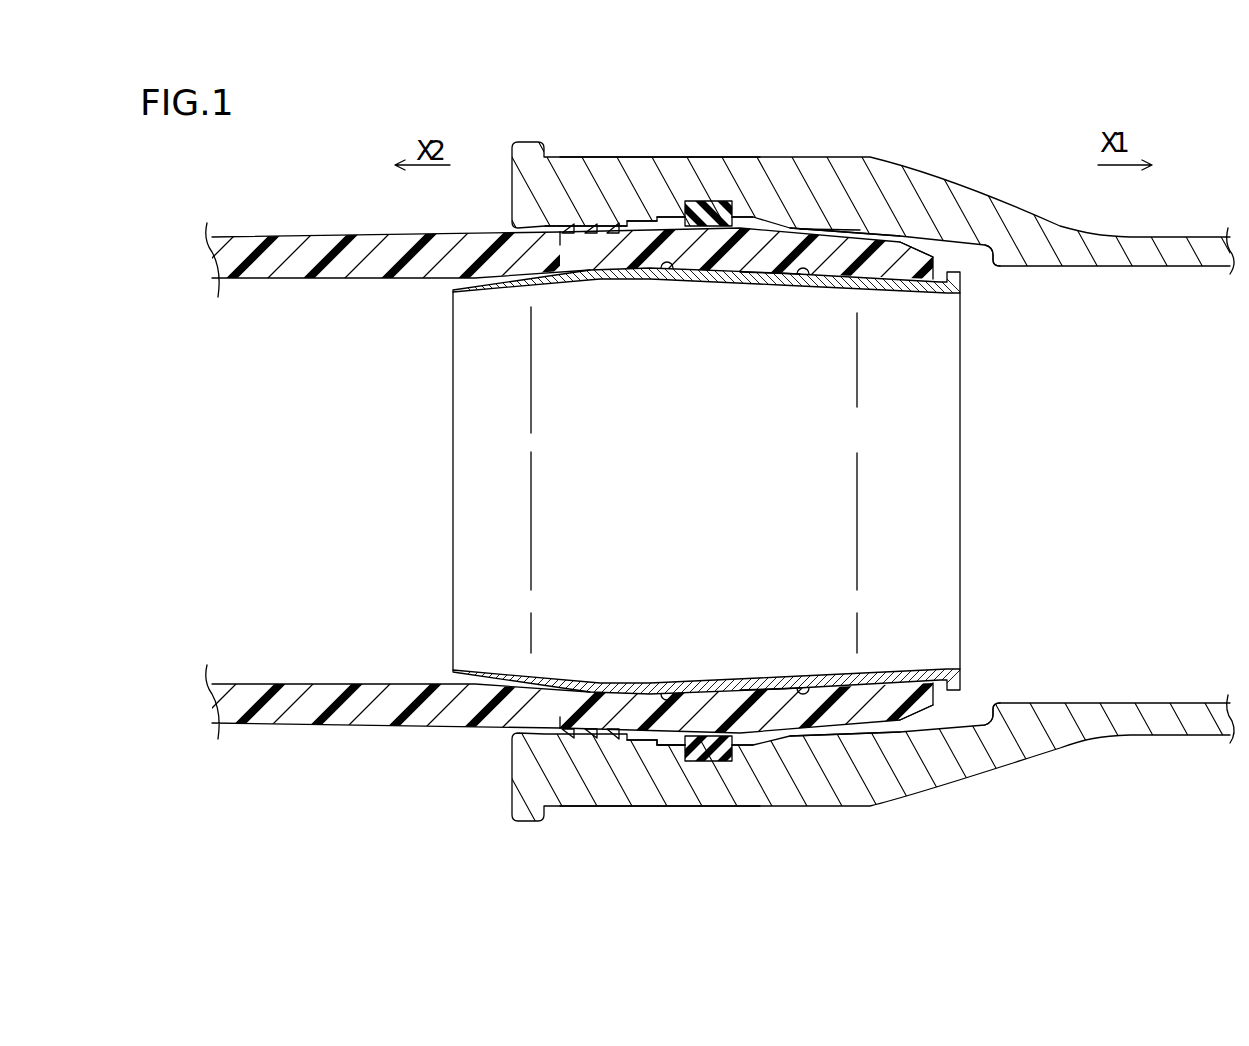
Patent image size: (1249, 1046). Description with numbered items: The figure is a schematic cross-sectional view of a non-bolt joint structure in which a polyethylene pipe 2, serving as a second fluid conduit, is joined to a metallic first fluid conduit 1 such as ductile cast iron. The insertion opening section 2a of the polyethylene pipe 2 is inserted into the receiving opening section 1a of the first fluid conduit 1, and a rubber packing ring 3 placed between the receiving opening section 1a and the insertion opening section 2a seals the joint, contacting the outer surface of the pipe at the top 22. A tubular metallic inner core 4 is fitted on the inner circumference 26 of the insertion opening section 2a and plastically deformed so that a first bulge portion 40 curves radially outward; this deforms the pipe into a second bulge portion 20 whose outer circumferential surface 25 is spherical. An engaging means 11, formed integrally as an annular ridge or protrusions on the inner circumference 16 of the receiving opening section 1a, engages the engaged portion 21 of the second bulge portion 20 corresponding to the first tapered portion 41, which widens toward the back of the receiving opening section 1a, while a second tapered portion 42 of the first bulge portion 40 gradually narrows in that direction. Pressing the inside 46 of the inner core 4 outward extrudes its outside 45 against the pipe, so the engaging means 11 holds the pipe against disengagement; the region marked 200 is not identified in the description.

The first fluid conduit 1 is at (902, 160).
The receiving opening section 1a is at (658, 157).
The polyethylene pipe 2 is at (292, 237).
The insertion opening section 2a is at (852, 232).
The packing ring 3 is at (722, 199).
The inner core 4 is at (936, 440).
The engaging means 11 is at (625, 234).
The inner circumference 16 is at (971, 268).
The second bulge portion 20 is at (739, 214).
The engaged portion 21 is at (611, 226).
The top 22 is at (688, 230).
The outer circumferential surface 25 is at (830, 240).
The inner circumference 26 is at (779, 273).
The first bulge portion 40 is at (702, 250).
The first tapered portion 41 is at (559, 238).
The second tapered portion 42 is at (827, 268).
The outside 45 is at (674, 232).
The inside 46 is at (734, 272).
The seal seat 200 is at (671, 768).